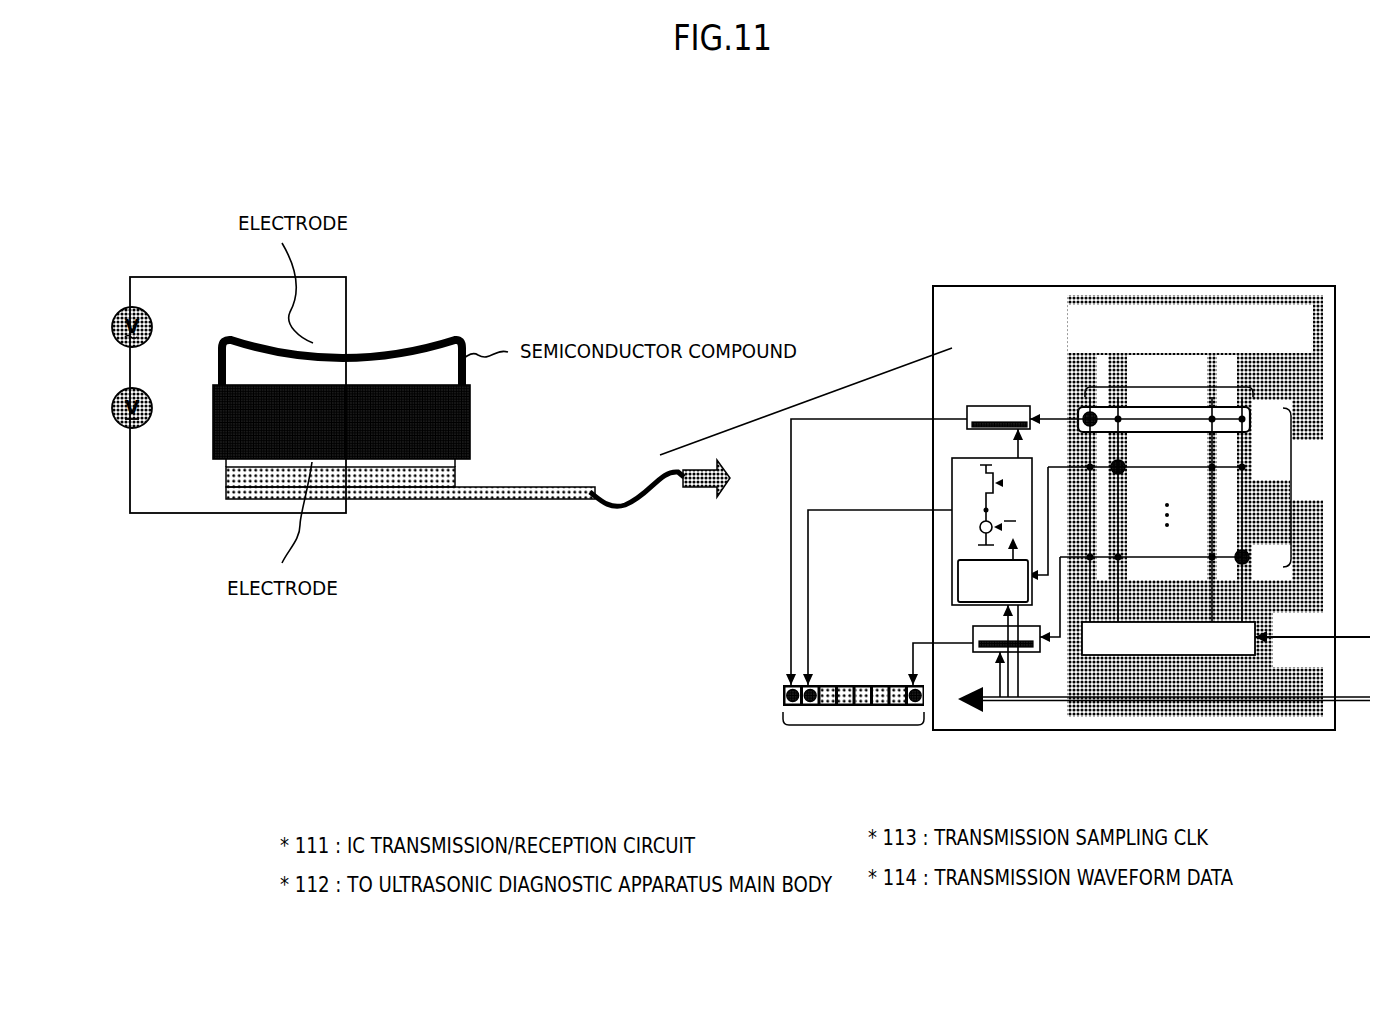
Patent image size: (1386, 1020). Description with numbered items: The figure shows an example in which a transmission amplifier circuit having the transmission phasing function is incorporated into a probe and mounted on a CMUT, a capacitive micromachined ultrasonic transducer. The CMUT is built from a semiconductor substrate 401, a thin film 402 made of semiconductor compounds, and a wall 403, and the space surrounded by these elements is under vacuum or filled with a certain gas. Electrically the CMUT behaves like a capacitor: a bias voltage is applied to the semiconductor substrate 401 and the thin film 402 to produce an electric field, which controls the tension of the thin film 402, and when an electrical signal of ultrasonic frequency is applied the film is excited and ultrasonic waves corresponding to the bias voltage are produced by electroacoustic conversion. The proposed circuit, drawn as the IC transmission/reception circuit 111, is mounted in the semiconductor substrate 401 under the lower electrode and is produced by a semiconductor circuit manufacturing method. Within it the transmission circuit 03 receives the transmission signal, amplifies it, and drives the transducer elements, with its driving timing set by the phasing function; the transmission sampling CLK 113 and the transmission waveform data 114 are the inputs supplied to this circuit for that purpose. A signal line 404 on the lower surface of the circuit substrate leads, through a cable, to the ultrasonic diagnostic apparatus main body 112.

The semiconductor substrate 401 is at (463, 427).
The thin film 402 is at (355, 350).
The wall 403 is at (202, 345).
The signal line 404 is at (612, 500).
The IC transmission/reception circuit 111 is at (443, 475).
The connection to ultrasonic diagnostic apparatus main body 112 is at (703, 488).
The transmission sampling CLK 113 is at (1312, 628).
The transmission waveform data 114 is at (1164, 689).
The transmission circuit 03 is at (953, 468).